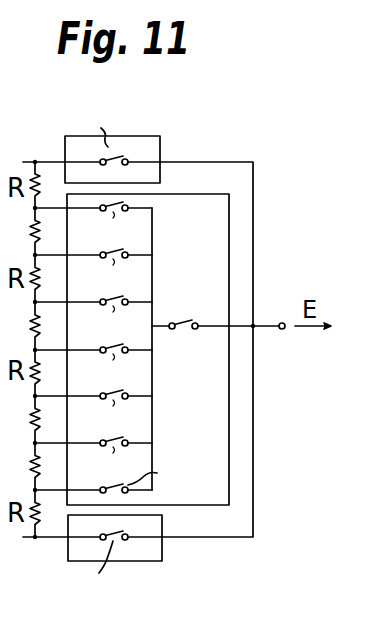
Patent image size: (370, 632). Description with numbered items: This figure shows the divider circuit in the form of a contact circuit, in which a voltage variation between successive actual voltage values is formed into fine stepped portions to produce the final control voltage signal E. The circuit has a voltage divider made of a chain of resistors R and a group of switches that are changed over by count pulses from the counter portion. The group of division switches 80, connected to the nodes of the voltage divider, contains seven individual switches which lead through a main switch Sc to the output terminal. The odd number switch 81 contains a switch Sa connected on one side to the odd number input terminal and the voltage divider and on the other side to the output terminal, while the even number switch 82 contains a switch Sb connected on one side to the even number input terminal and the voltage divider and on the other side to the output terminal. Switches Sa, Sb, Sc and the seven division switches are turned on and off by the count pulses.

The group of division switches 80 is at (229, 268).
The odd number switch 81 is at (138, 561).
The even number switch 82 is at (126, 137).